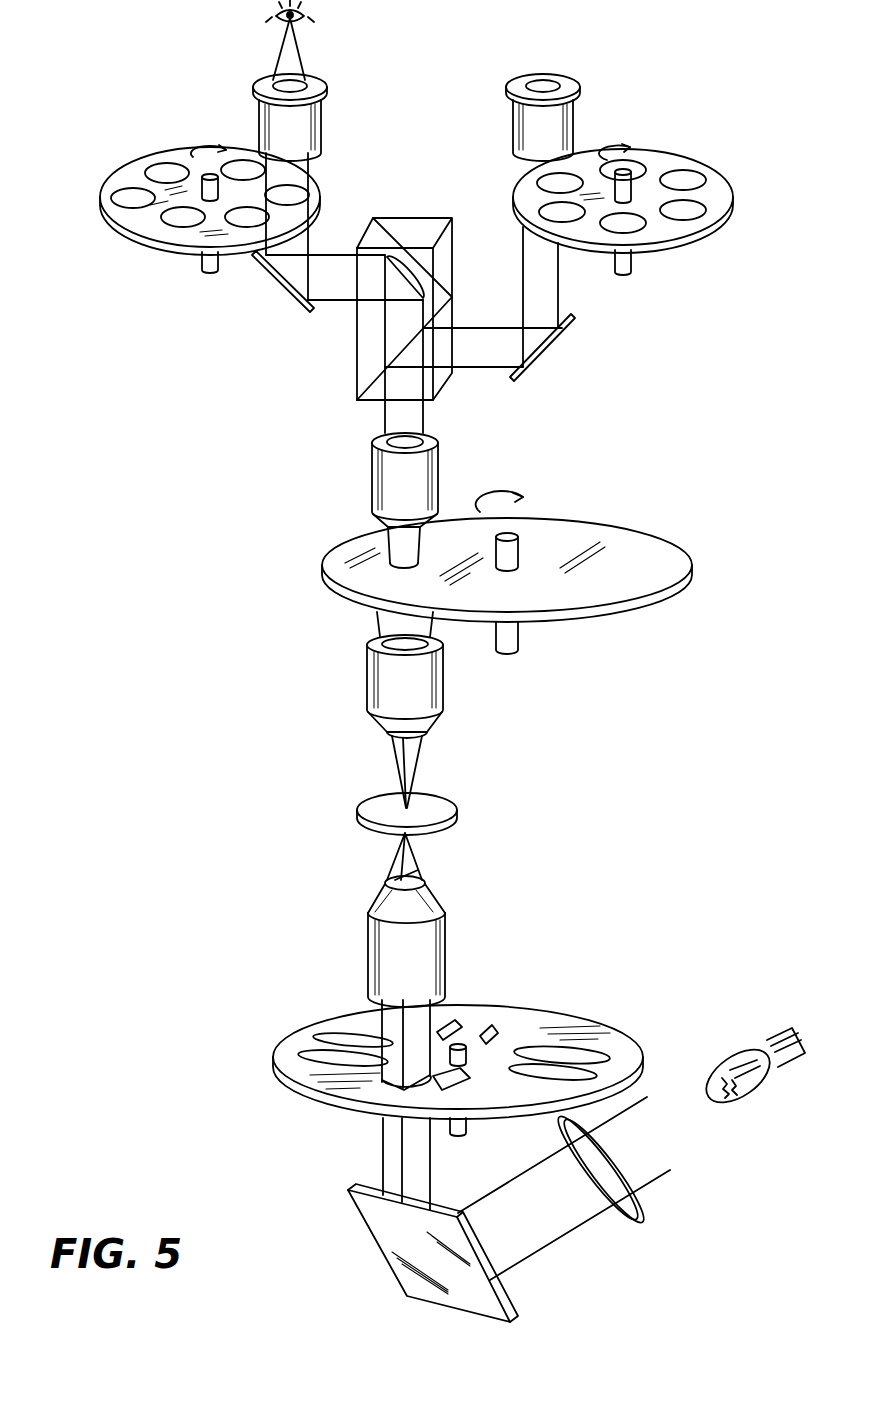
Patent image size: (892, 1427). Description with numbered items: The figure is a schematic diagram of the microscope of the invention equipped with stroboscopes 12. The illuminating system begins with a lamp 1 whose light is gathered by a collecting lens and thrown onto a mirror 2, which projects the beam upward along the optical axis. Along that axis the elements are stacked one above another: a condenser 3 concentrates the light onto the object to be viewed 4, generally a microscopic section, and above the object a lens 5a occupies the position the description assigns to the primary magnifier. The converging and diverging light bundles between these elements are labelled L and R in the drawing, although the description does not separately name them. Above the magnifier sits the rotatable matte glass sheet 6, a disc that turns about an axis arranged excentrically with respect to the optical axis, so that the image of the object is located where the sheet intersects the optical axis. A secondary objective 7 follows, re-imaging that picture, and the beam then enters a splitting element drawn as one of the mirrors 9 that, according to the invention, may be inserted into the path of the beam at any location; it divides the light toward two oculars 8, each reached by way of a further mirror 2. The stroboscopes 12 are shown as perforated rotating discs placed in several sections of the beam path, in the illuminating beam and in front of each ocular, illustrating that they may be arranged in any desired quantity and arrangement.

The lamp 1 is at (627, 1213).
The mirror 2 is at (303, 308).
The condenser 3 is at (430, 945).
The object to be viewed 4 is at (442, 807).
The lens 5a is at (438, 686).
The rotatable matte glass sheet 6 is at (517, 535).
The secondary objective 7 is at (375, 486).
The ocular 8 is at (312, 129).
The mirror 9 is at (363, 363).
The stroboscope 12 is at (157, 233).
The light beam L is at (392, 757).
The light ray R is at (420, 862).